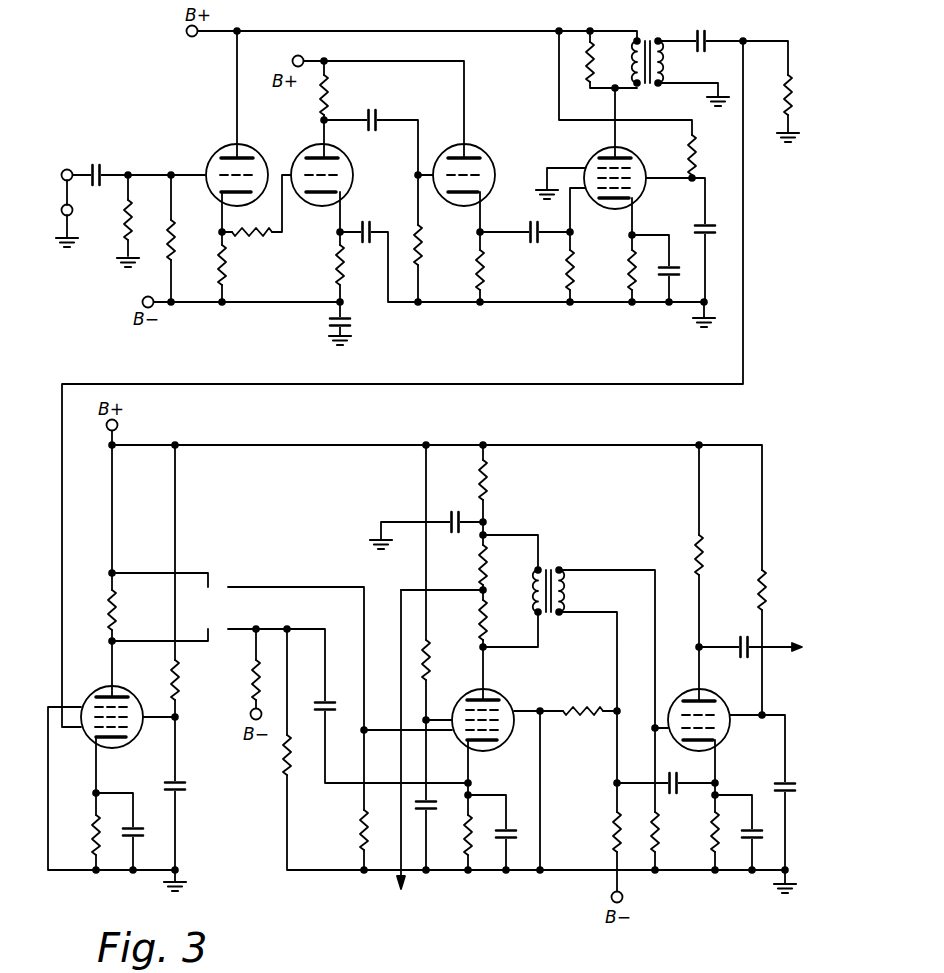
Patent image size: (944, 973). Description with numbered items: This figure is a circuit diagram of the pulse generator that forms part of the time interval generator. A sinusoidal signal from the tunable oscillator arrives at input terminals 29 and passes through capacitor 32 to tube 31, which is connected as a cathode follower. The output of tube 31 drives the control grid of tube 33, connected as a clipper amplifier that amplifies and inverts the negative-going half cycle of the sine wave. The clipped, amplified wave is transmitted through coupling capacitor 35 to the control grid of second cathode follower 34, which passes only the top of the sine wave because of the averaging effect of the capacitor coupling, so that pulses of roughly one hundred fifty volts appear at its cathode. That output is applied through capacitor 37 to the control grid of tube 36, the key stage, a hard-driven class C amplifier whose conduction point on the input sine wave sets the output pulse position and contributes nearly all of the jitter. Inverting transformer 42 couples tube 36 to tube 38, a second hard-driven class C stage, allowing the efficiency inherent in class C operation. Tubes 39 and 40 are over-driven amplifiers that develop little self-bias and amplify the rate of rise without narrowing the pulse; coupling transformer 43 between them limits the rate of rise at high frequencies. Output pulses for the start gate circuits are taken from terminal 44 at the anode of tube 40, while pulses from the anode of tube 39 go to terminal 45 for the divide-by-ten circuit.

The input terminals 29 is at (64, 194).
The tube 31 is at (231, 140).
The capacitor 32 is at (98, 164).
The tube 33 is at (356, 149).
The second cathode follower 34 is at (483, 144).
The coupling capacitor 35 is at (372, 110).
The tube 36 is at (634, 144).
The capacitor 37 is at (535, 244).
The tube 38 is at (126, 685).
The tube 39 is at (500, 685).
The tube 40 is at (716, 687).
The inverting transformer 42 is at (650, 38).
The coupling transformer 43 is at (553, 568).
The terminal 44 is at (770, 647).
The terminal 45 is at (403, 890).